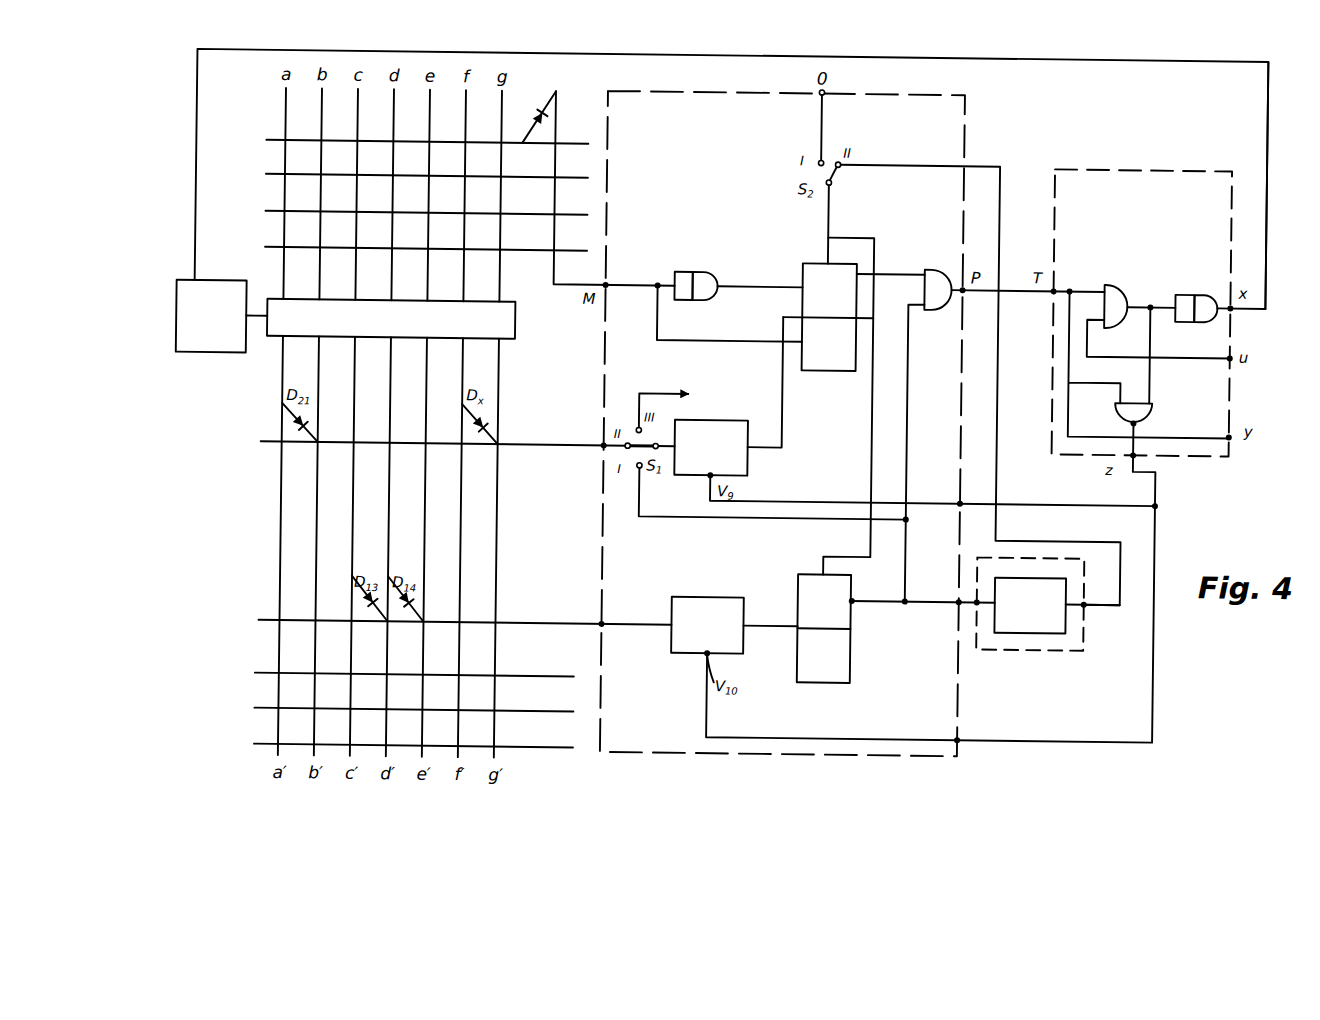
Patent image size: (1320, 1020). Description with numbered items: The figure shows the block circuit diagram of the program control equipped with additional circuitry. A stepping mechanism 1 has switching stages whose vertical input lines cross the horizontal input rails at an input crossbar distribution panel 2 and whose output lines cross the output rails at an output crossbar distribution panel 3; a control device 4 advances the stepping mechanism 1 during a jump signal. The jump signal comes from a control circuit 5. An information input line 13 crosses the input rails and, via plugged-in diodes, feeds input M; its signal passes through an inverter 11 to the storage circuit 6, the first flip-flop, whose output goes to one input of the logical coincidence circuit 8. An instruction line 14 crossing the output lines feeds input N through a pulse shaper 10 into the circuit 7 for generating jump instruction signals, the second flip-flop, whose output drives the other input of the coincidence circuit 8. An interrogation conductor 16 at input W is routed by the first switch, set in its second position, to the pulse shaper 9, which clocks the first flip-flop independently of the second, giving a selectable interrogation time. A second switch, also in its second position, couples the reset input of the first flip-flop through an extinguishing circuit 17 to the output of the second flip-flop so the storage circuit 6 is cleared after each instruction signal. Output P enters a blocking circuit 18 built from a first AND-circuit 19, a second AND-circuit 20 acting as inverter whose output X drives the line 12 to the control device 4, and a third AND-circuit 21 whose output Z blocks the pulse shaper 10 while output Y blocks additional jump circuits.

The stepping mechanism 1 is at (518, 311).
The input crossbar distribution panel 2 is at (267, 107).
The output crossbar distribution panel 3 is at (271, 642).
The control device 4 is at (205, 353).
The control circuit 5 is at (946, 90).
The storage circuit 6 is at (808, 258).
The circuit for generating jump instruction signals 7 is at (858, 648).
The logical coincidence circuit 8 is at (938, 262).
The pulse shaper 9 is at (752, 468).
The pulse shaper 10 is at (694, 648).
The inverter 11 is at (705, 266).
The line 12 is at (1263, 222).
The information input line 13 is at (556, 89).
The instruction line 14 is at (528, 620).
The interrogation conductor 16 is at (528, 441).
The extinguishing circuit 17 is at (1050, 645).
The blocking circuit 18 is at (1142, 160).
The first AND-circuit 19 is at (1118, 277).
The second AND-circuit 20 is at (1206, 284).
The third AND-circuit 21 is at (1157, 400).